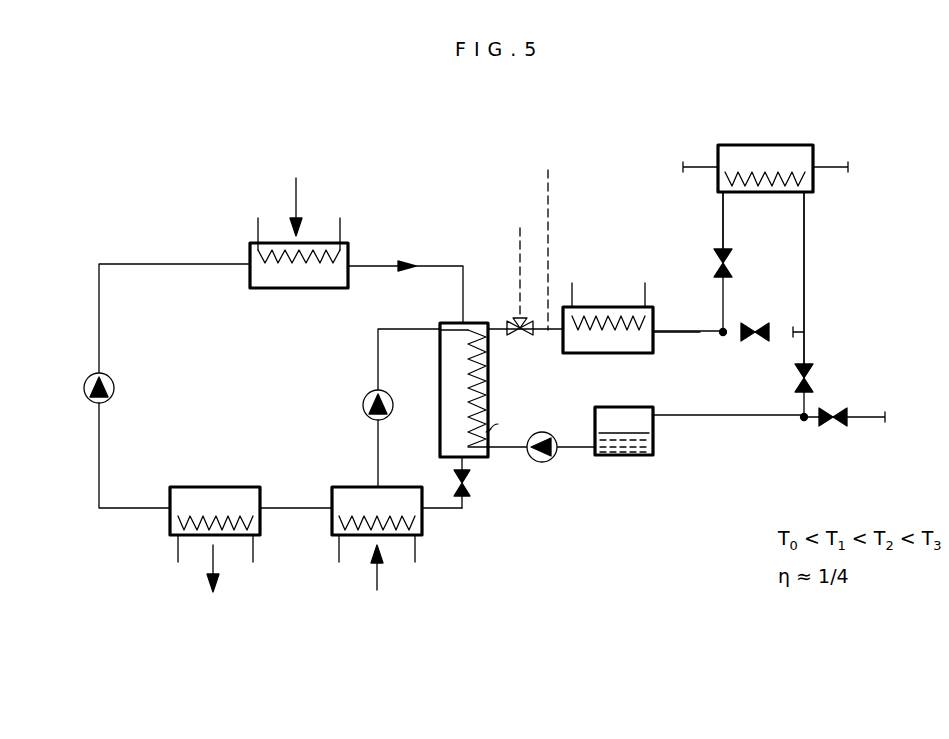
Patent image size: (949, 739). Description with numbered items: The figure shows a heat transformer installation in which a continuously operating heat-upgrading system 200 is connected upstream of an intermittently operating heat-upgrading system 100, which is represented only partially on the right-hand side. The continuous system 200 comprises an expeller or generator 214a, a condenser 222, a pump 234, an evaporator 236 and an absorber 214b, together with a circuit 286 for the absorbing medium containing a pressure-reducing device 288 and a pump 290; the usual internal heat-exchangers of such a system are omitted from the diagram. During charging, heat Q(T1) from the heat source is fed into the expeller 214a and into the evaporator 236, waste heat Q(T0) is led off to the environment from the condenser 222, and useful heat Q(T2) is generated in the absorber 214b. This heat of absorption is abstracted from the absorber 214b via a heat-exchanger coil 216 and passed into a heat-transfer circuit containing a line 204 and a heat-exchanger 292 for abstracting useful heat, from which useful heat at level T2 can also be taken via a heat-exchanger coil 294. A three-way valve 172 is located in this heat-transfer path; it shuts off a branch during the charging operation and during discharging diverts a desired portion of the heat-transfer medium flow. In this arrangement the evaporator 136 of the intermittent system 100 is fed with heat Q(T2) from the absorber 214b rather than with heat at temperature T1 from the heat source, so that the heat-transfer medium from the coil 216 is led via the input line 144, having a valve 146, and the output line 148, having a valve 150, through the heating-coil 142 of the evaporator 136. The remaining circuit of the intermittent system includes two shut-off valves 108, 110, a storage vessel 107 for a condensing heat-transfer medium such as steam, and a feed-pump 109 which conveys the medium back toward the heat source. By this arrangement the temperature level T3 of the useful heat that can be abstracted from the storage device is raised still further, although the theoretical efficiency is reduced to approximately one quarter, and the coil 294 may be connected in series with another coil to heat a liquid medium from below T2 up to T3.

The heat-upgrading system 100 is at (780, 467).
The storage vessel 107 is at (648, 456).
The shut-off valve 108 is at (758, 324).
The feed-pump 109 is at (552, 460).
The shut-off valve 110 is at (838, 410).
The evaporator 136 is at (770, 148).
The heating-coil 142 is at (782, 172).
The input line 144 is at (722, 216).
The valve 146 is at (718, 266).
The output line 148 is at (806, 246).
The valve 150 is at (810, 376).
The three-way valve 172 is at (516, 322).
The heat-upgrading system 200 is at (293, 367).
The line 204 is at (703, 336).
The expeller or generator 214a is at (338, 495).
The absorber 214b is at (488, 380).
The heat-exchanger coil 216 is at (498, 390).
The condenser 222 is at (190, 492).
The pump 234 is at (113, 383).
The evaporator 236 is at (348, 252).
The circuit for the absorbing medium 286 is at (430, 378).
The pressure-reducing device 288 is at (472, 484).
The pump 290 is at (365, 414).
The heat-exchanger 292 is at (608, 336).
The heat-exchanger coil 294 is at (626, 334).